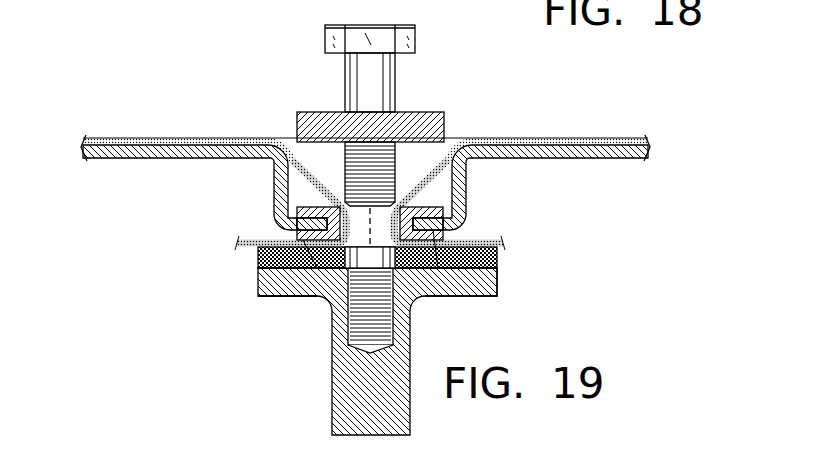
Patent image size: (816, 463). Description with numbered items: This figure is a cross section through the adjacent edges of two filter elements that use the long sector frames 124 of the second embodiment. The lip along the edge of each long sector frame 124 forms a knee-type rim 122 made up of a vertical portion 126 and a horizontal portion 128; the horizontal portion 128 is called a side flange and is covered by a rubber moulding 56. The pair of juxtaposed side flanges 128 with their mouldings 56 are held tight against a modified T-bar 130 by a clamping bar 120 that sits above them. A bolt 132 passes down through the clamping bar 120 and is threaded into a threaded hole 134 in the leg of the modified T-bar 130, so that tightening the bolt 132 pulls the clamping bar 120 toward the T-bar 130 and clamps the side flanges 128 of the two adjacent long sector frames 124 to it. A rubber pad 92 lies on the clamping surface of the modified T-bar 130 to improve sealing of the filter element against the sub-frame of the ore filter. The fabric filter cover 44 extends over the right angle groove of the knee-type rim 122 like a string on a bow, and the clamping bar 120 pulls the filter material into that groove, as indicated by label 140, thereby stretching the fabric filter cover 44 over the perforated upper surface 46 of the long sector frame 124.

The fabric filter cover 44 is at (540, 137).
The perforated upper surface 46 is at (153, 160).
The rubber moulding 56 is at (283, 297).
The rubber pad 92 is at (262, 258).
The clamping bar 120 is at (312, 112).
The knee-type rim 122 is at (518, 193).
The long sector frame 124 is at (583, 160).
The vertical portion 126 is at (273, 188).
The horizontal portion 128 is at (477, 293).
The modified T-bar 130 is at (332, 403).
The bolt 132 is at (325, 38).
The threaded hole 134 is at (348, 320).
The filter material pulled into groove 140 is at (427, 185).